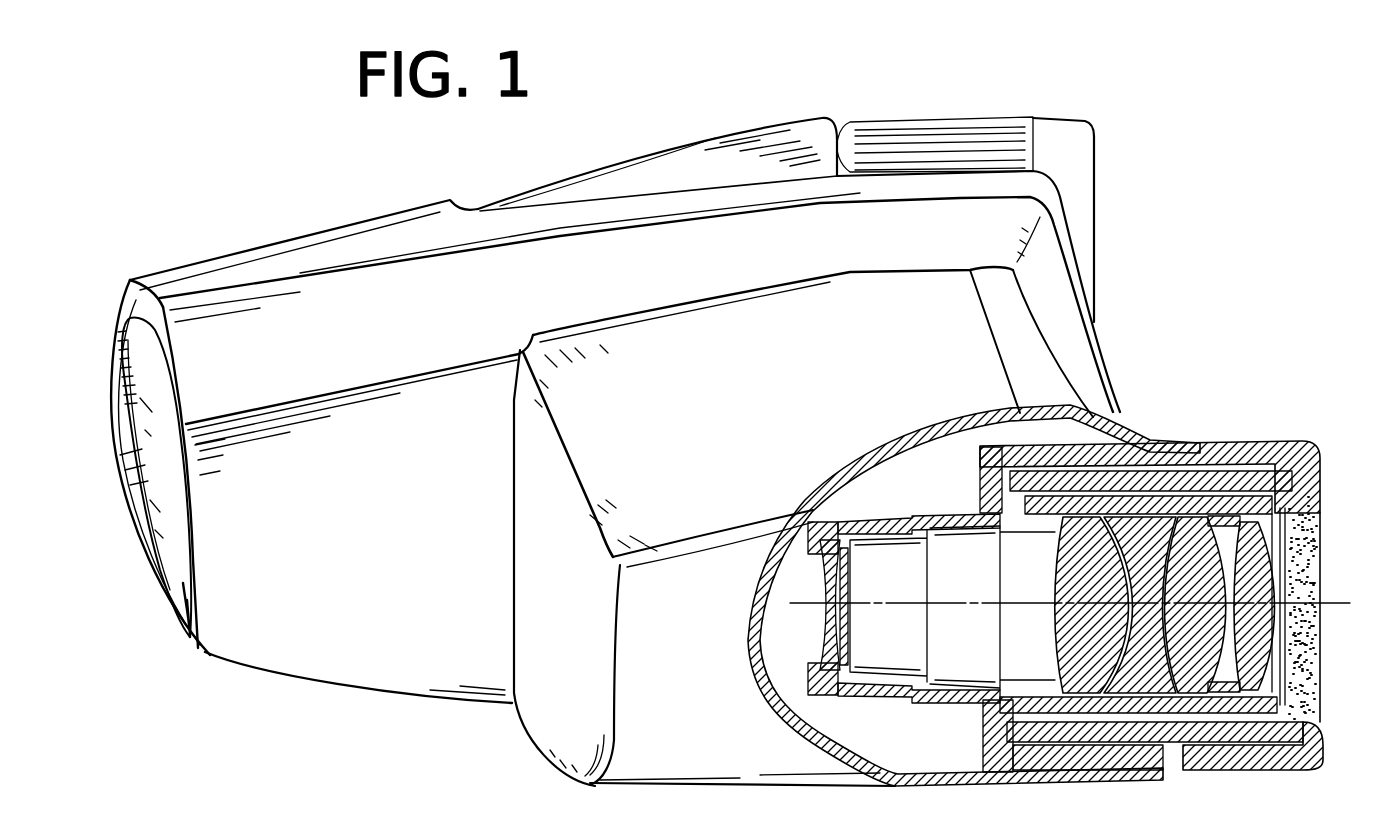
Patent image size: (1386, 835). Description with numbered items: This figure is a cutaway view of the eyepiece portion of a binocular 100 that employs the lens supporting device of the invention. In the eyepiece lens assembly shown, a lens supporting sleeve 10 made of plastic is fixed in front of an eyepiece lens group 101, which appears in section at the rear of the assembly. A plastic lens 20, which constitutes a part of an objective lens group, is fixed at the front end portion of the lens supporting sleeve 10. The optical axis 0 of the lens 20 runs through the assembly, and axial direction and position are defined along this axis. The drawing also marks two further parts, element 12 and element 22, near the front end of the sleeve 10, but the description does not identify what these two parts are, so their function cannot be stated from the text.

The binocular 100 is at (1114, 161).
The lens supporting sleeve 10 is at (885, 527).
The plastic lens 20 is at (823, 630).
The front flange 12 is at (806, 688).
The lens retaining ring 22 is at (835, 695).
The optical axis 0 is at (1347, 603).
The eyepiece lens group 101 is at (1297, 642).